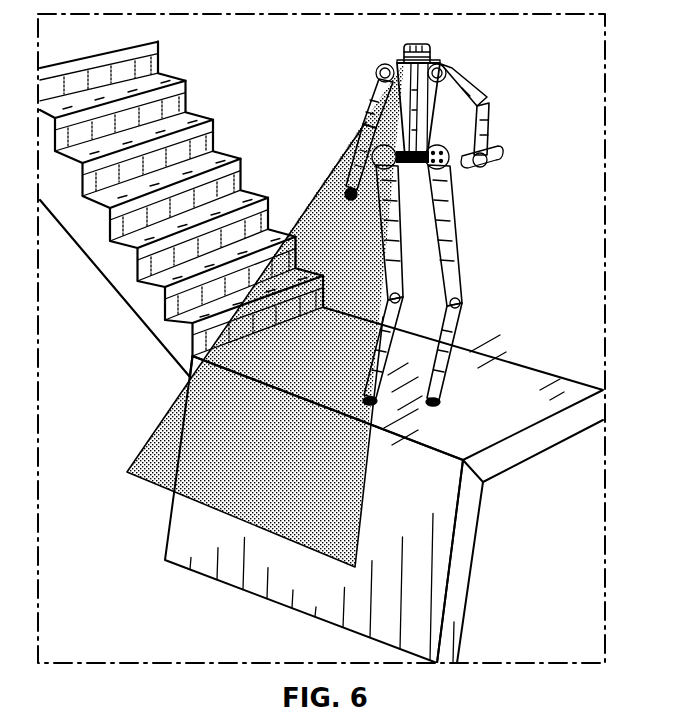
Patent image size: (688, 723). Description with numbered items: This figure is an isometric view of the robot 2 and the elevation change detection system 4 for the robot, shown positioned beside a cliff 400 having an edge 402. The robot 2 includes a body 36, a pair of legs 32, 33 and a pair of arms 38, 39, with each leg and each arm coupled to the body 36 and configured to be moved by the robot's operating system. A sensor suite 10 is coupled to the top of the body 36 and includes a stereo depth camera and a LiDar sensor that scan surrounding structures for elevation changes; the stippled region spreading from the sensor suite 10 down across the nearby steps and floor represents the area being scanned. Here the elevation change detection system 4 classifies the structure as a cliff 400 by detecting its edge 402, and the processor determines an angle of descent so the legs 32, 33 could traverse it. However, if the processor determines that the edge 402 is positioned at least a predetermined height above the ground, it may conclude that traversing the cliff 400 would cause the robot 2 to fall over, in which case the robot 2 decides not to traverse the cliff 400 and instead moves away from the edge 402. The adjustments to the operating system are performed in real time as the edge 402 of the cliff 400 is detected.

The robot 2 is at (323, 53).
The elevation change detection system 4 is at (383, 55).
The sensor suite 10 is at (431, 56).
The body 36 is at (428, 127).
The arm 38 is at (372, 118).
The arm 39 is at (473, 138).
The leg 33 is at (390, 320).
The leg 32 is at (448, 338).
The cliff 400 is at (182, 530).
The edge 402 is at (437, 457).